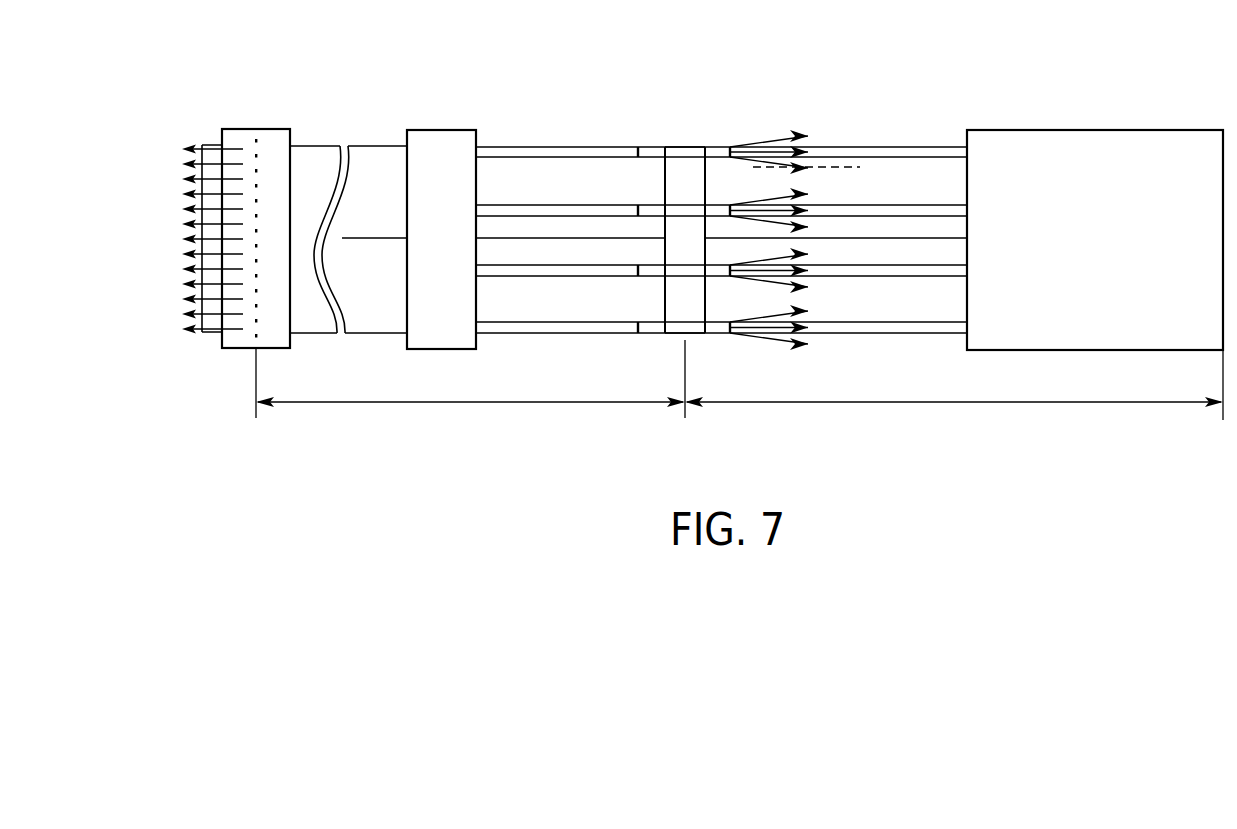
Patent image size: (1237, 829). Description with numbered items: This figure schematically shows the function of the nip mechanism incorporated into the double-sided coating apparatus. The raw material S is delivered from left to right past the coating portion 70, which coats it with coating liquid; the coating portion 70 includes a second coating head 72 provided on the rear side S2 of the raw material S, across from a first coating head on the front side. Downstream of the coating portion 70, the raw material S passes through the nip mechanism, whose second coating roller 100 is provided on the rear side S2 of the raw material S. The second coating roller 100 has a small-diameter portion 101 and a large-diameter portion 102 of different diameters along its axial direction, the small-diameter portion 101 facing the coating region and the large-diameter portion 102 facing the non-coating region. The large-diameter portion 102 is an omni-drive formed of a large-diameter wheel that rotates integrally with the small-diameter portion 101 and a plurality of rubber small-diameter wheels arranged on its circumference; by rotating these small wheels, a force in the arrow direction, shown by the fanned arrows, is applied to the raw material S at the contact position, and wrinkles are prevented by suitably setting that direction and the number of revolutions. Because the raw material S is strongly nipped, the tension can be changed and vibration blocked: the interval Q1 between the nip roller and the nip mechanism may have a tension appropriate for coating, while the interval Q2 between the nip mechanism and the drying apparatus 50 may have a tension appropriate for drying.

The drying apparatus 50 is at (1098, 130).
The coating portion 70 is at (440, 130).
The second coating head 72 is at (443, 350).
The second coating roller 100 is at (682, 147).
The small-diameter portion 101 is at (673, 232).
The large-diameter portion 102 is at (650, 203).
The raw material S is at (313, 146).
The rear side S2 is at (365, 146).
The interval Q1 is at (470, 392).
The interval Q2 is at (954, 399).